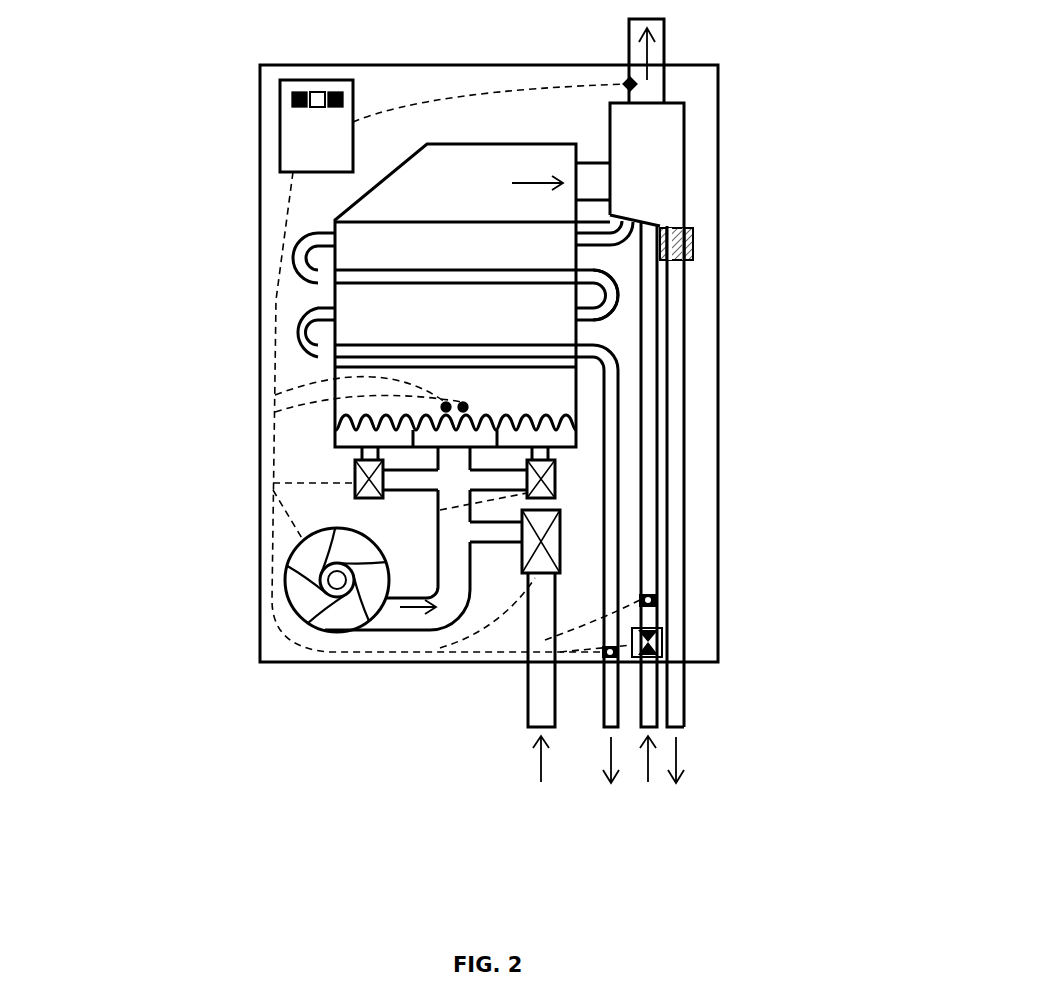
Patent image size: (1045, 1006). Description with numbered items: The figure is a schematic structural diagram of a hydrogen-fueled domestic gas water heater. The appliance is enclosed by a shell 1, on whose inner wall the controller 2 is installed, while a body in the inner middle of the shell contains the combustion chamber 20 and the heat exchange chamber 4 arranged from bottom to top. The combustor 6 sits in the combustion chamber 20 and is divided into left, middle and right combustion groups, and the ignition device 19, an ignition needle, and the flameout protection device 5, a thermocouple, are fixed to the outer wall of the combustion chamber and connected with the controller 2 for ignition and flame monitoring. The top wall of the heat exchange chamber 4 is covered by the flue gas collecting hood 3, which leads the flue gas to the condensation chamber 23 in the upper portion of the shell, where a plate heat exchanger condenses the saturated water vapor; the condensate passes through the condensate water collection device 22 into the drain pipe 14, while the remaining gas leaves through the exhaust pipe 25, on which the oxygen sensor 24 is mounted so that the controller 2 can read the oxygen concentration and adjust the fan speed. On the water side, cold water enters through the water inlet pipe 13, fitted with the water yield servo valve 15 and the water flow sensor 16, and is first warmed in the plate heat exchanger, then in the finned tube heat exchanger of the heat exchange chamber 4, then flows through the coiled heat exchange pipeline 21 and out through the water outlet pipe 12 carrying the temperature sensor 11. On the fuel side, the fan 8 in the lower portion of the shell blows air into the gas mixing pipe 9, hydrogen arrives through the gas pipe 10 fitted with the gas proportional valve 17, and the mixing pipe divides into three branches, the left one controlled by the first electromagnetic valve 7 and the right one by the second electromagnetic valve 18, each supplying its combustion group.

The shell 1 is at (258, 78).
The controller 2 is at (320, 126).
The flue gas collecting hood 3 is at (460, 192).
The heat exchange chamber 4 is at (445, 257).
The flameout protection device 5 is at (443, 405).
The combustor 6 is at (352, 434).
The first electromagnetic valve 7 is at (357, 484).
The fan 8 is at (330, 586).
The gas mixing pipe 9 is at (455, 510).
The gas pipe 10 is at (540, 688).
The temperature sensor 11 is at (597, 663).
The water outlet pipe 12 is at (612, 703).
The water inlet pipe 13 is at (648, 703).
The drain pipe 14 is at (675, 710).
The water yield servo valve 15 is at (665, 643).
The water flow sensor 16 is at (660, 600).
The gas proportional valve 17 is at (560, 540).
The second electromagnetic valve 18 is at (555, 479).
The ignition device 19 is at (468, 404).
The combustion chamber 20 is at (500, 385).
The heat exchange pipeline 21 is at (614, 297).
The condensate water collection device 22 is at (692, 246).
The condensation chamber 23 is at (640, 137).
The oxygen sensor 24 is at (633, 85).
The exhaust pipe 25 is at (664, 44).